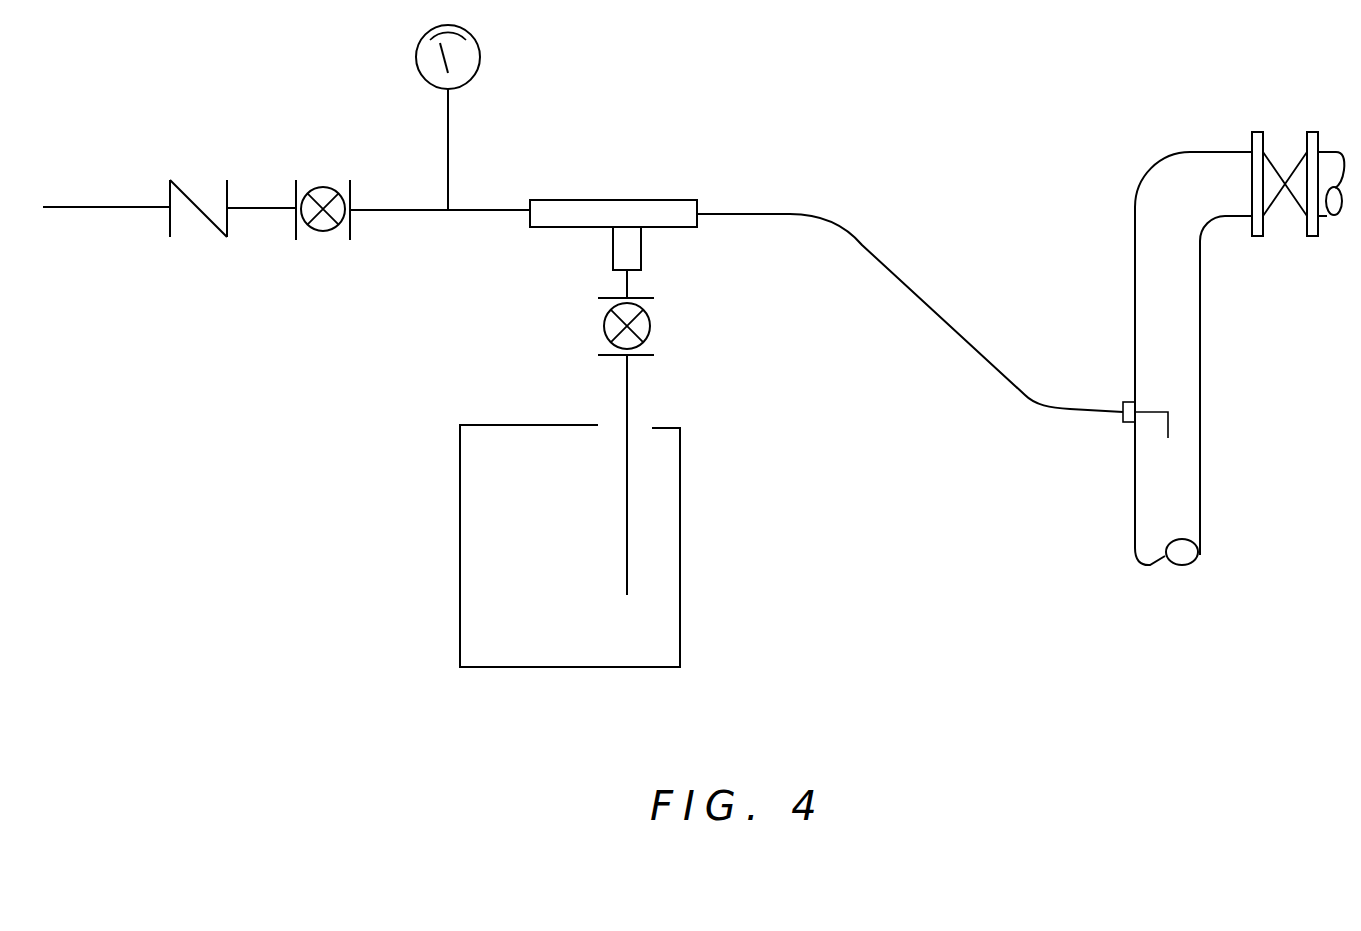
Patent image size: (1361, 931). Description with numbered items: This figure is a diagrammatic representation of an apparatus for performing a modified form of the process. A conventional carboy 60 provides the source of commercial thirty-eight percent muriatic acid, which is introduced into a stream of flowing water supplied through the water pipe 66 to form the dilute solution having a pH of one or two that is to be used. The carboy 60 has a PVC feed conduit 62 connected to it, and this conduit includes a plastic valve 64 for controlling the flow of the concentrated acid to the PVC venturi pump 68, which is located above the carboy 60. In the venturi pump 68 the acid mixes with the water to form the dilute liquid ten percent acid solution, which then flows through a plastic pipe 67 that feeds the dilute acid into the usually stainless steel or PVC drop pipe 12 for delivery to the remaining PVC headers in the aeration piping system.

The drop pipe 12 is at (1203, 333).
The carboy 60 is at (453, 563).
The PVC feed conduit 62 is at (620, 400).
The plastic valve 64 is at (660, 330).
The water pipe 66 is at (97, 197).
The plastic pipe 67 is at (870, 228).
The PVC venturi pump 68 is at (630, 188).